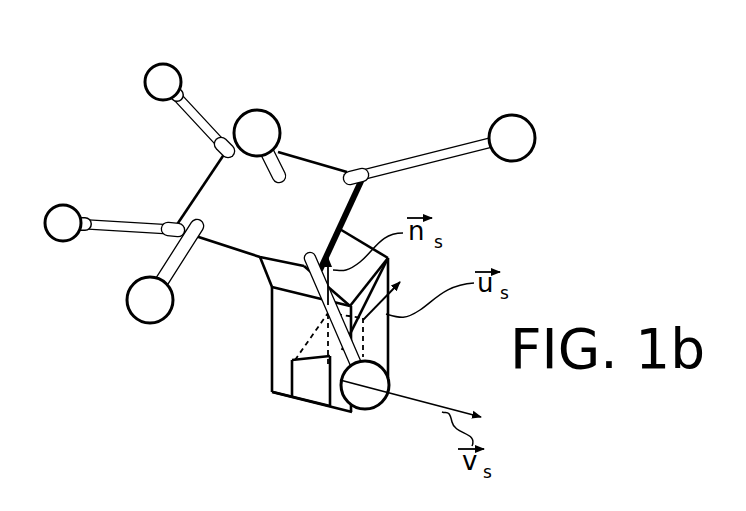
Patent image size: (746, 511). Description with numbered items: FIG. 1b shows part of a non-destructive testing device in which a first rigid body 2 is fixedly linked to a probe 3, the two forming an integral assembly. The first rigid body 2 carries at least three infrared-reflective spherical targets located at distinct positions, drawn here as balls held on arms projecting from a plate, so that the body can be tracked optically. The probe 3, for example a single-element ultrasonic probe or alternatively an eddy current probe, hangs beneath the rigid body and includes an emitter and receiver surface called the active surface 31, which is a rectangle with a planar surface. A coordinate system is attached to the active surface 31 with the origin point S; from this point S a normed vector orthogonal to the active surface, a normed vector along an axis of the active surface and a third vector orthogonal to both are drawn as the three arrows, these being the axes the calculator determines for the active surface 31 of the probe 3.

The first rigid body 2 is at (322, 204).
The probe 3 is at (292, 361).
The active surface 31 is at (313, 403).
The origin point S is at (292, 393).